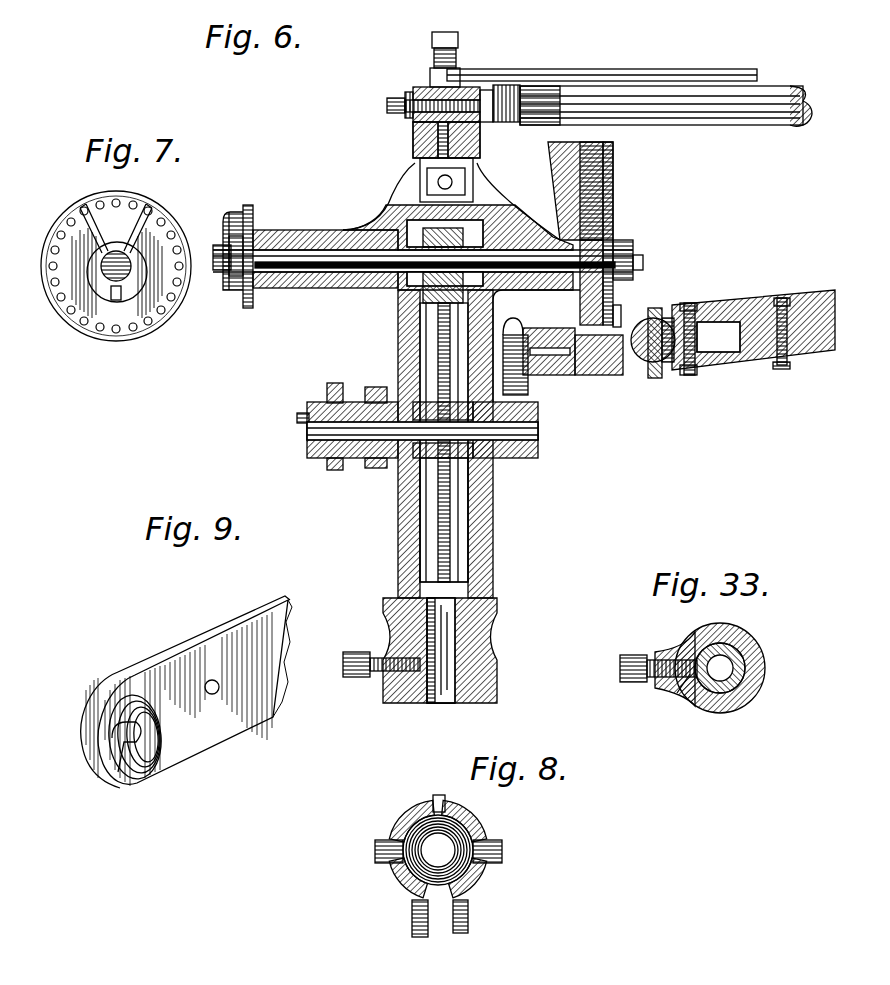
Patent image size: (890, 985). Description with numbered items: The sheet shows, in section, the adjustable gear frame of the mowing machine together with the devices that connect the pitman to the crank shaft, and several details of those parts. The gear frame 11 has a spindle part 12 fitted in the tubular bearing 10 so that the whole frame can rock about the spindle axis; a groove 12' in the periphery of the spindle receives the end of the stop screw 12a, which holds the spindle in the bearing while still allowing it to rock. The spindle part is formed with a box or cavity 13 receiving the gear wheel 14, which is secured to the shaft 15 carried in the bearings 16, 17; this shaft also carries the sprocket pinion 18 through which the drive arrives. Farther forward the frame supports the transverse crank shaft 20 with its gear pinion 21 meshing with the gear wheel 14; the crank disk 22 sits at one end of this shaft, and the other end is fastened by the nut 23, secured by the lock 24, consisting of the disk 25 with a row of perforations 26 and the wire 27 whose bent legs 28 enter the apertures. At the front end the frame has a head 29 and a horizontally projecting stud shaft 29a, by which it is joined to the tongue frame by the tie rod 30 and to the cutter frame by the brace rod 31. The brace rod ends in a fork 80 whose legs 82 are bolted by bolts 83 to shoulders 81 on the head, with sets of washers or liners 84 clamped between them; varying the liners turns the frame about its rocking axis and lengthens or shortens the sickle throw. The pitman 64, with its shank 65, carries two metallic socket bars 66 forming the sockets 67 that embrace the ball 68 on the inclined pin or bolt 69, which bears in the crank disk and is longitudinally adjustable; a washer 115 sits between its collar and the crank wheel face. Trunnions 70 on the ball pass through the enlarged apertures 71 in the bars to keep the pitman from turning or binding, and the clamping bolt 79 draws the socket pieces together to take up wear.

In FIG. 6, the tubular bearing 10 is at (498, 671).
In FIG. 33, the tubular bearing 10 is at (763, 688).
In FIG. 6, the gear frame 11 is at (494, 562).
In FIG. 6, the spindle part 12 is at (484, 650).
In FIG. 33, the spindle part 12 is at (747, 662).
In FIG. 6, the stop screw 12a is at (380, 668).
In FIG. 33, the stop screw 12a is at (658, 668).
In FIG. 6, the groove 12' is at (428, 712).
In FIG. 33, the groove 12' is at (676, 703).
In FIG. 6, the box or cavity 13 is at (420, 486).
In FIG. 6, the gear wheel 14 is at (456, 500).
In FIG. 6, the shaft 15 is at (540, 432).
In FIG. 6, the bearing 16 is at (527, 407).
In FIG. 6, the bearing 17 is at (362, 400).
In FIG. 6, the sprocket pinion 18 is at (312, 462).
In FIG. 6, the crank shaft 20 is at (318, 276).
In FIG. 7, the crank shaft 20 is at (115, 291).
In FIG. 6, the gear pinion 21 is at (392, 290).
In FIG. 6, the crank disk 22 is at (592, 232).
In FIG. 6, the nut 23 is at (236, 282).
In FIG. 7, the nut 23 is at (142, 289).
In FIG. 6, the lock 24 is at (232, 212).
In FIG. 7, the lock 24 is at (72, 222).
In FIG. 6, the disk 25 is at (253, 218).
In FIG. 7, the disk 25 is at (84, 332).
In FIG. 7, the perforations 26 is at (116, 340).
In FIG. 6, the wire 27 is at (226, 232).
In FIG. 7, the wire 27 is at (117, 263).
In FIG. 6, the bent legs 28 is at (233, 212).
In FIG. 7, the bent legs 28 is at (92, 205).
In FIG. 6, the head 29 is at (425, 143).
In FIG. 6, the stud shaft 29a is at (432, 72).
In FIG. 6, the tie rod 30 is at (665, 76).
In FIG. 6, the brace rod 31 is at (748, 126).
In FIG. 6, the pitman 64 is at (793, 381).
In FIG. 6, the shank 65 is at (790, 312).
In FIG. 6, the socket bars 66 is at (722, 316).
In FIG. 9, the socket bars 66 is at (247, 723).
In FIG. 8, the socket bars 66 is at (427, 937).
In FIG. 6, the socket 67 is at (675, 312).
In FIG. 9, the socket 67 is at (150, 770).
In FIG. 8, the socket 67 is at (415, 813).
In FIG. 6, the ball 68 is at (647, 357).
In FIG. 8, the ball 68 is at (458, 842).
In FIG. 6, the pin or bolt 69 is at (542, 345).
In FIG. 6, the trunnions 70 is at (655, 316).
In FIG. 8, the trunnions 70 is at (503, 851).
In FIG. 6, the apertures 71 is at (650, 326).
In FIG. 9, the apertures 71 is at (100, 777).
In FIG. 8, the apertures 71 is at (476, 842).
In FIG. 6, the clamping bolt 79 is at (718, 337).
In FIG. 6, the fork 80 is at (522, 124).
In FIG. 6, the shoulders 81 is at (408, 91).
In FIG. 6, the legs 82 is at (507, 88).
In FIG. 6, the bolts 83 is at (388, 107).
In FIG. 6, the washers or liners 84 is at (455, 88).
In FIG. 6, the washer 115 is at (607, 378).